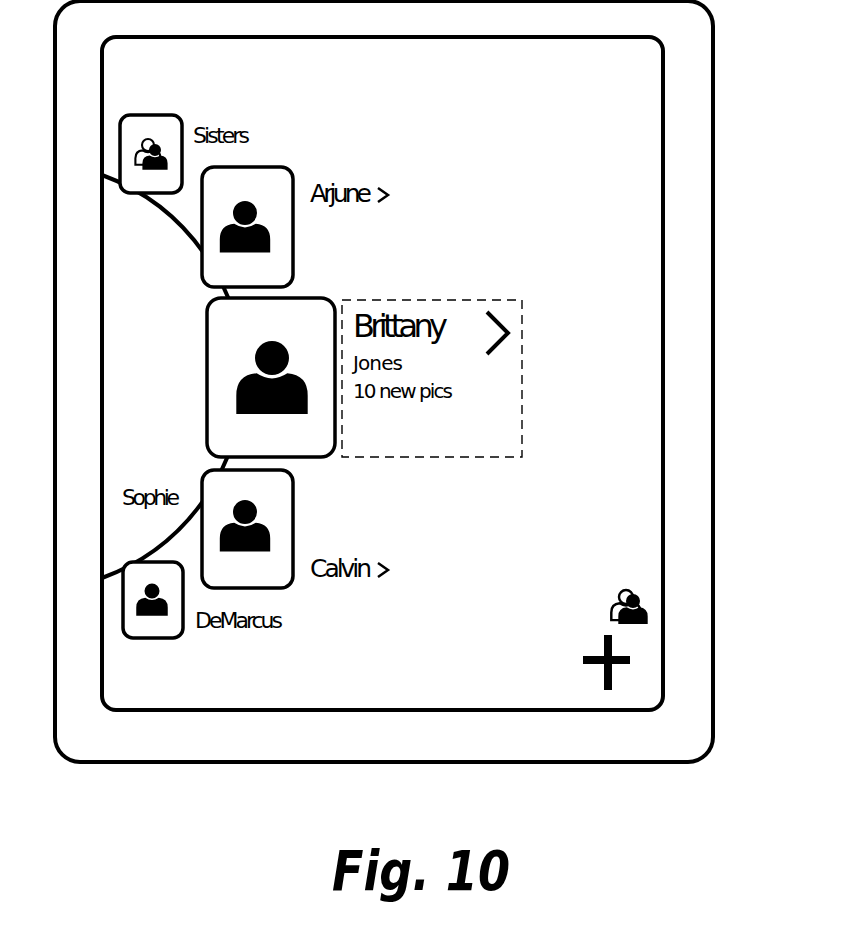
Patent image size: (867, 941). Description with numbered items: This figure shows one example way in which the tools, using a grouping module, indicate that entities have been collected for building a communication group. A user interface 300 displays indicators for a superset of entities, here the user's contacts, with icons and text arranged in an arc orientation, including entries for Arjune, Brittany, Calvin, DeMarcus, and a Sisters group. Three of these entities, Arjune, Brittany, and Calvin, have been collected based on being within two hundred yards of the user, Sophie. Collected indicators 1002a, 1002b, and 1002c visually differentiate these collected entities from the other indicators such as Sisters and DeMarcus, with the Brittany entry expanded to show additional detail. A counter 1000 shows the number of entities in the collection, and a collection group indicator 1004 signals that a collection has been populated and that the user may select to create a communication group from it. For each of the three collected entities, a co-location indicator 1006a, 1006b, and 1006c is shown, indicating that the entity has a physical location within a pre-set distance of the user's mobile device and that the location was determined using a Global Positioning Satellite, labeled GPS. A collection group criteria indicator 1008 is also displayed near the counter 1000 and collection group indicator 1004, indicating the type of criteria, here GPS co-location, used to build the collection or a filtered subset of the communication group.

The user interface 300 is at (632, 83).
The counter 1000 is at (568, 582).
The collected indicator 1002a is at (405, 184).
The collected indicator 1002b is at (516, 298).
The collected indicator 1002c is at (397, 545).
The collection group indicator 1004 is at (651, 589).
The co-location indicator 1006a is at (428, 231).
The co-location indicator 1006b is at (517, 460).
The co-location indicator 1006c is at (413, 611).
The collection group criteria indicator 1008 is at (545, 681).